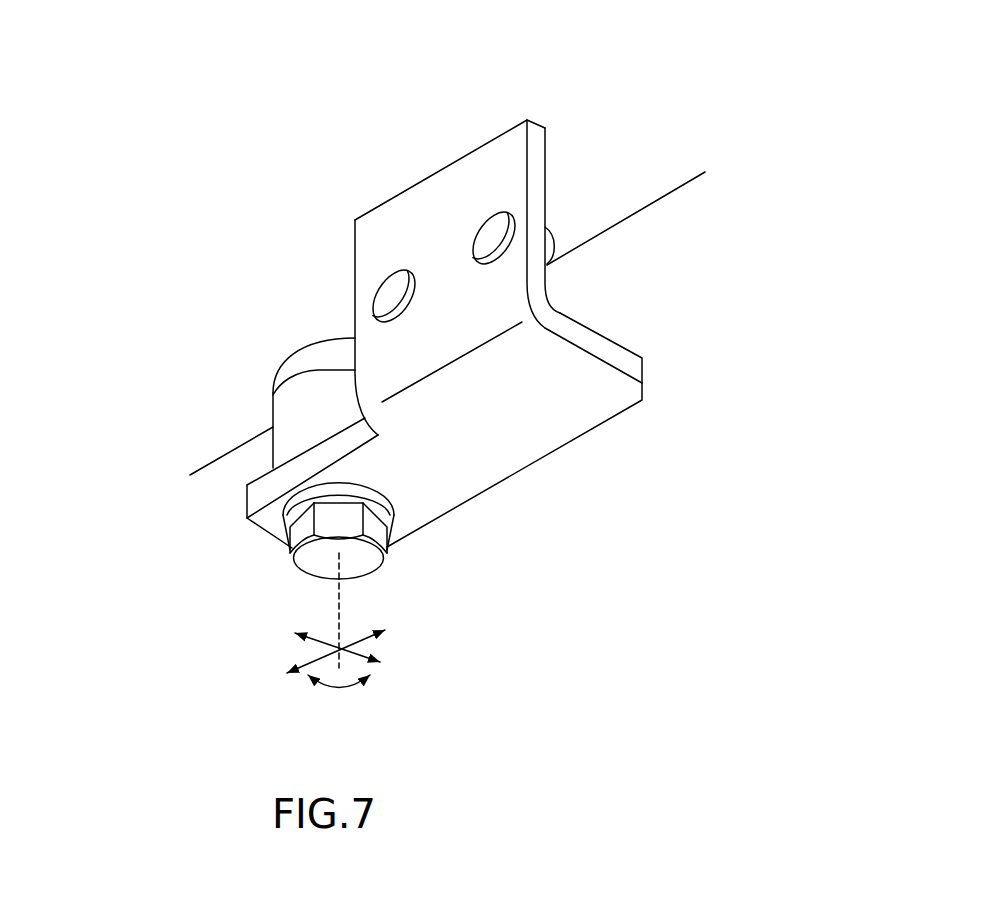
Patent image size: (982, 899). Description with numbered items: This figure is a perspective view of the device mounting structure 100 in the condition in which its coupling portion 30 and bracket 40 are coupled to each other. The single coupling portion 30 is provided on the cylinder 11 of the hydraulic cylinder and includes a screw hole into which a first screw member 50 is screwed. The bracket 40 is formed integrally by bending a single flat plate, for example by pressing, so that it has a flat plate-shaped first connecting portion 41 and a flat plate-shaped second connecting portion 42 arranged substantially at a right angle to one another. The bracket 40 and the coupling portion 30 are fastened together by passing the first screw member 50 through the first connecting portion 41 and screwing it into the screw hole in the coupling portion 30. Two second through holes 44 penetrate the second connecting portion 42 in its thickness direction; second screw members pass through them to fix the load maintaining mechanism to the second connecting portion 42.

The device mounting structure 100 is at (150, 172).
The cylinder 11 is at (632, 213).
The coupling portion 30 is at (320, 340).
The bracket 40 is at (626, 447).
The first connecting portion 41 is at (602, 424).
The second connecting portion 42 is at (538, 118).
The second through holes 44 is at (397, 272).
The first screw member 50 is at (289, 550).